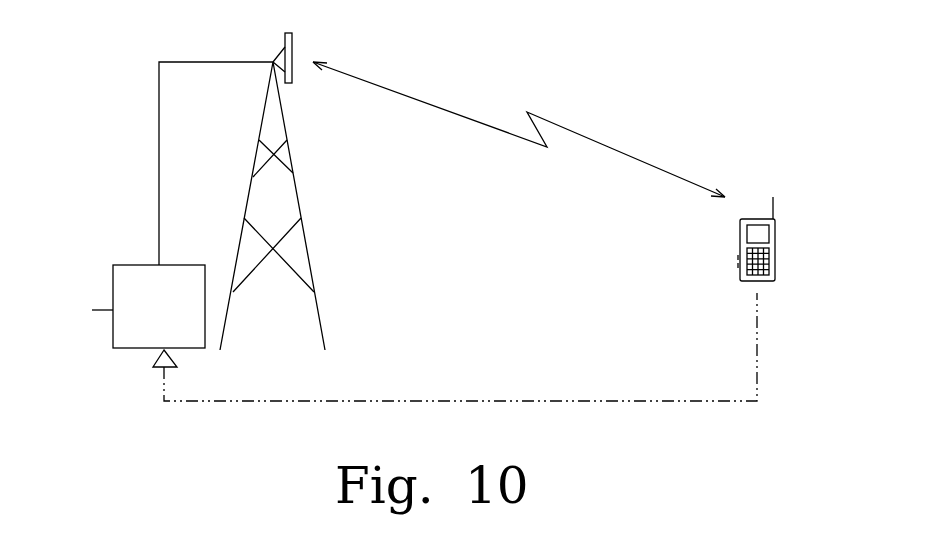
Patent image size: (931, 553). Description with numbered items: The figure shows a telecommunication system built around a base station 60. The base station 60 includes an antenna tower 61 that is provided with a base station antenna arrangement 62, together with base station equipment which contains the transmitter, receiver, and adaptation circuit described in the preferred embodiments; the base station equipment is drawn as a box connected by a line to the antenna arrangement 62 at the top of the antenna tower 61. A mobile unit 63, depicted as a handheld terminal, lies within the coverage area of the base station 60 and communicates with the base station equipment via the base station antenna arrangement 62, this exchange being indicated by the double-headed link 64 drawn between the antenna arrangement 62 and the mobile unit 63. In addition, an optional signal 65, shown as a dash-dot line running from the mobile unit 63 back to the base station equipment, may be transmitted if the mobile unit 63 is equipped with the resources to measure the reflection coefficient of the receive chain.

The base station 60 is at (110, 58).
The antenna tower 61 is at (300, 215).
The base station antenna arrangement 62 is at (293, 45).
The mobile unit 63 is at (775, 240).
The communication indication 64 is at (519, 129).
The optional signal 65 is at (433, 401).